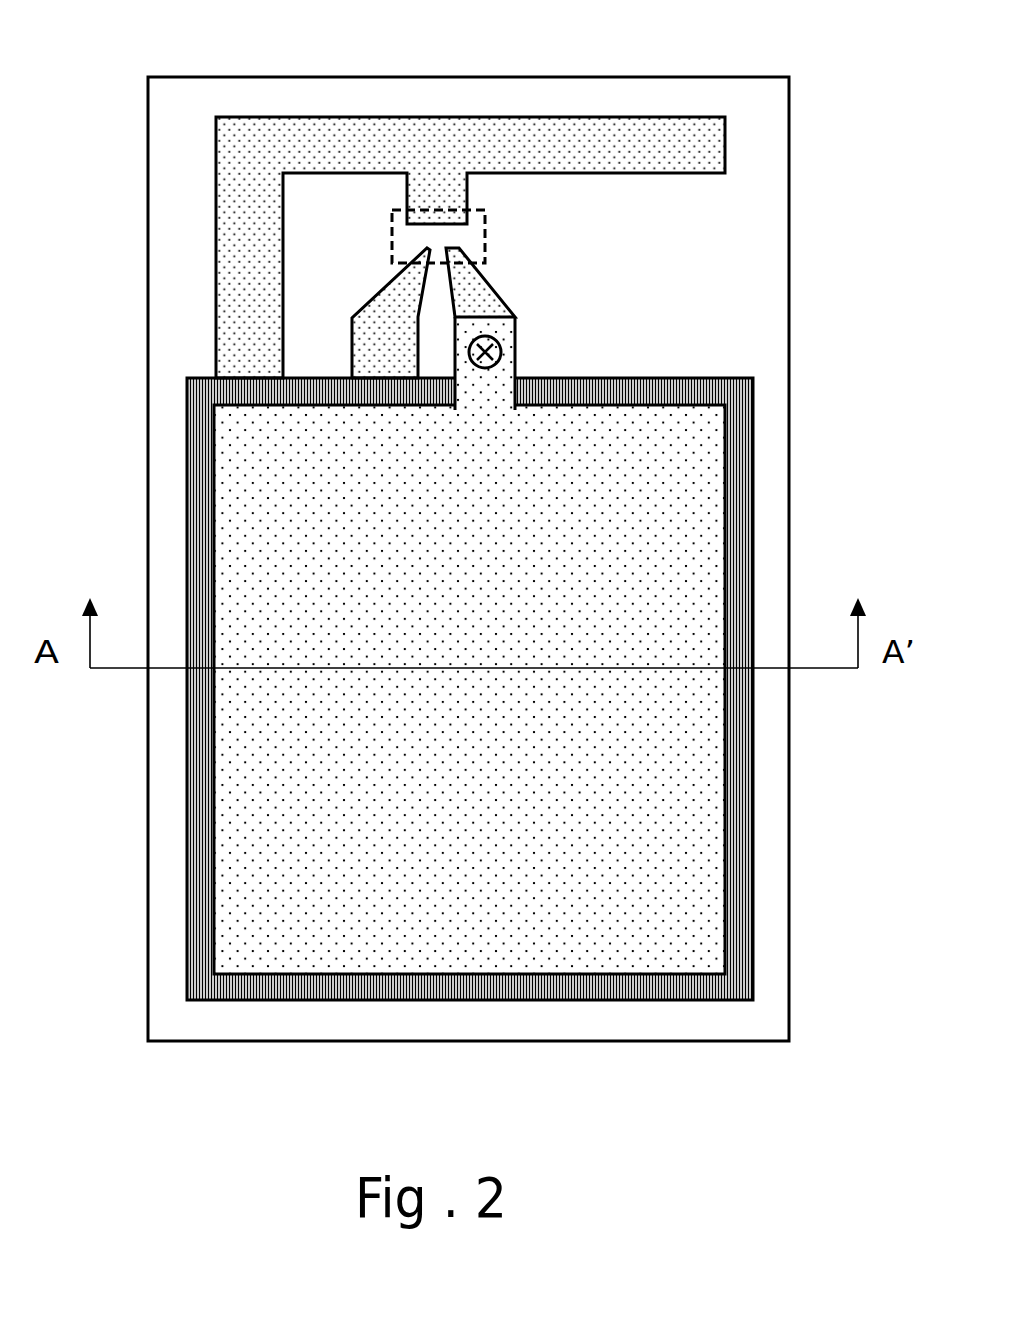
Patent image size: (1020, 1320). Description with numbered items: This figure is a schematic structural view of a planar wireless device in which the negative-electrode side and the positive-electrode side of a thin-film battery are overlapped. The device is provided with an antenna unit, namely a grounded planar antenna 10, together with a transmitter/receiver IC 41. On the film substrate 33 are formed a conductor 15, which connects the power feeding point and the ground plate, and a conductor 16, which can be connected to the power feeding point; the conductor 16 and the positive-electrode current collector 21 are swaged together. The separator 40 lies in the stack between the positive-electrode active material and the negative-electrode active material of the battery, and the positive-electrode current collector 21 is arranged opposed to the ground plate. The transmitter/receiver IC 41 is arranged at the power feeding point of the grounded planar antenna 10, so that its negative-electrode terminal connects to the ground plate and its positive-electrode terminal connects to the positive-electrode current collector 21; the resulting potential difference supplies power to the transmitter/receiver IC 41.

The grounded planar antenna 10 is at (410, 115).
The conductor 15 is at (370, 353).
The conductor 16 is at (483, 300).
The positive-electrode current collector 21 is at (680, 525).
The film substrate 33 is at (790, 232).
The separator 40 is at (672, 380).
The transmitter/receiver IC 41 is at (390, 236).